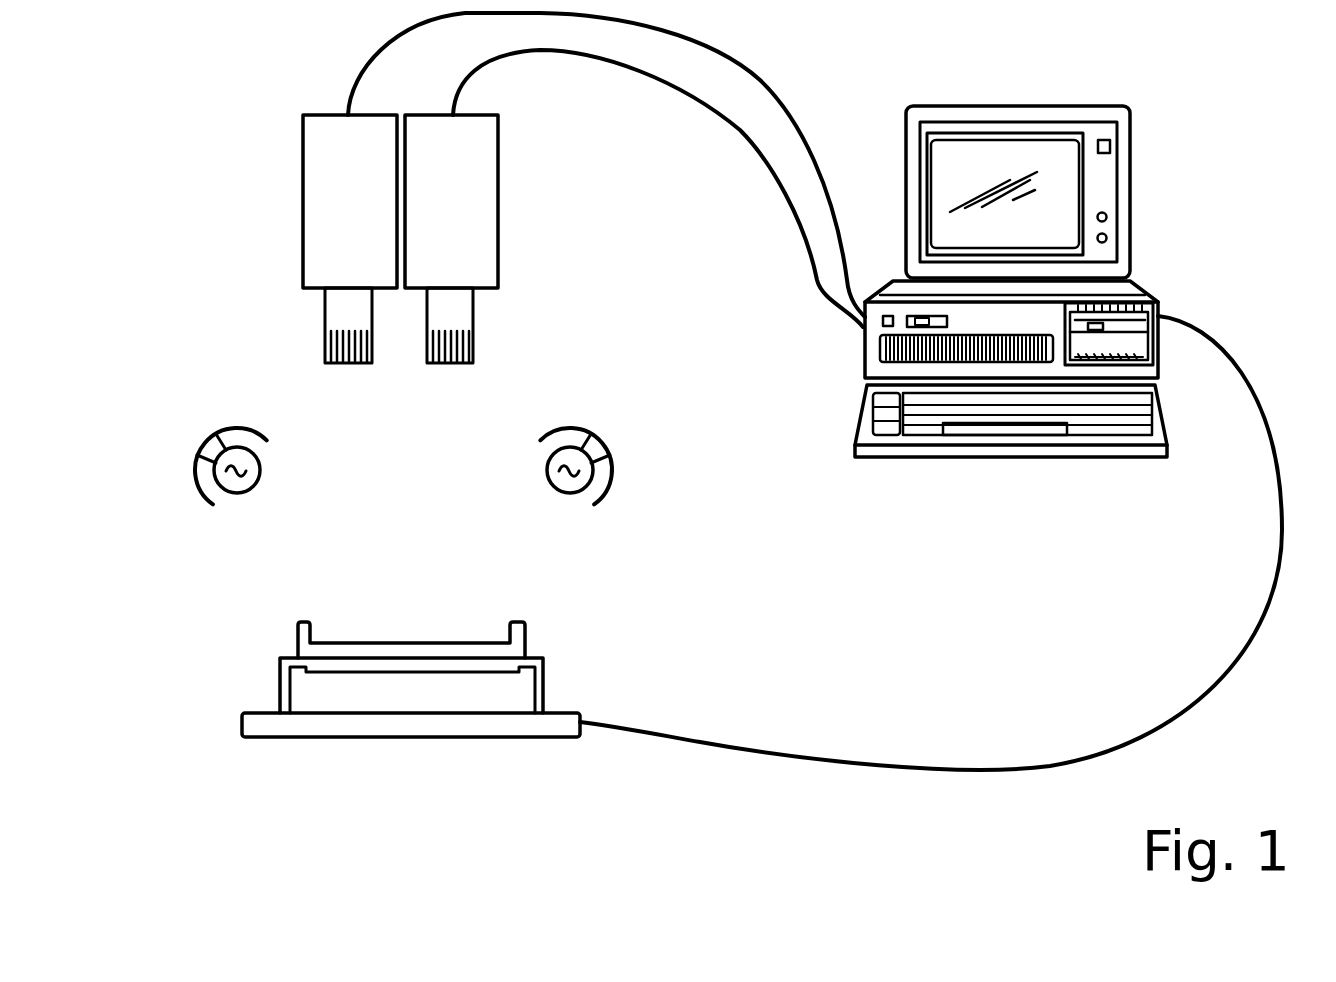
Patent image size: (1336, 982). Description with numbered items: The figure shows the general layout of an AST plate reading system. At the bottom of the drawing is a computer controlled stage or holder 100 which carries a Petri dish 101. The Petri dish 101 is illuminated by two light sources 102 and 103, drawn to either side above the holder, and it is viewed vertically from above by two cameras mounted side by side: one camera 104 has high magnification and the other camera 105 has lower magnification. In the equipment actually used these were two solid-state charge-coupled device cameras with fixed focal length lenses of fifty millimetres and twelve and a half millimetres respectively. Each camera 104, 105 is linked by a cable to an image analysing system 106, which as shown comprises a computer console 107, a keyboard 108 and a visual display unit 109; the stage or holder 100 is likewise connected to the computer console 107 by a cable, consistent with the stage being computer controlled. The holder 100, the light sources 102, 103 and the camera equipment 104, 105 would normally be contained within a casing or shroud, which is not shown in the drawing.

The computer controlled stage or holder 100 is at (363, 737).
The Petri dish 101 is at (423, 643).
The light source 102 is at (233, 493).
The light source 103 is at (574, 493).
The camera 104 is at (303, 232).
The camera 105 is at (498, 211).
The image analysing system 106 is at (1130, 274).
The computer console 107 is at (862, 348).
The keyboard 108 is at (1035, 458).
The visual display unit 109 is at (1055, 103).